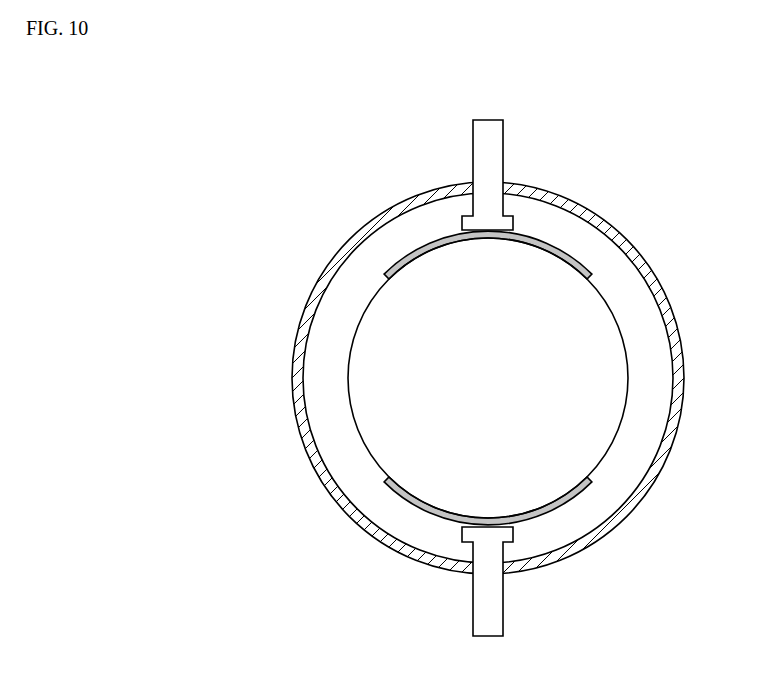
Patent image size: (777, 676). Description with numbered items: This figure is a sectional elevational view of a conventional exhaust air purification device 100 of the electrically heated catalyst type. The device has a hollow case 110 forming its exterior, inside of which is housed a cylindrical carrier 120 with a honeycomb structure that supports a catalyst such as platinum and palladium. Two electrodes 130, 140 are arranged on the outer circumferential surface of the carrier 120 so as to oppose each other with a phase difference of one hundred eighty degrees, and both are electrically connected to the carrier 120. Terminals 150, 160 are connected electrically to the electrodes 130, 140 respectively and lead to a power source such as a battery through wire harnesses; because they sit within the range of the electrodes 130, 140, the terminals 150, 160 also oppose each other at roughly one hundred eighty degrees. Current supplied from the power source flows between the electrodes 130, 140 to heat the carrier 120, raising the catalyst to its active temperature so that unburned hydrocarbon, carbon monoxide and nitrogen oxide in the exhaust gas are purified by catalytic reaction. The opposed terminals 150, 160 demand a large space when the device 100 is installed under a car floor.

The exhaust air purification device 100 is at (240, 130).
The case 110 is at (657, 462).
The carrier 120 is at (377, 373).
The electrode 130 is at (400, 261).
The electrode 140 is at (400, 497).
The terminal 150 is at (493, 139).
The terminal 160 is at (492, 617).